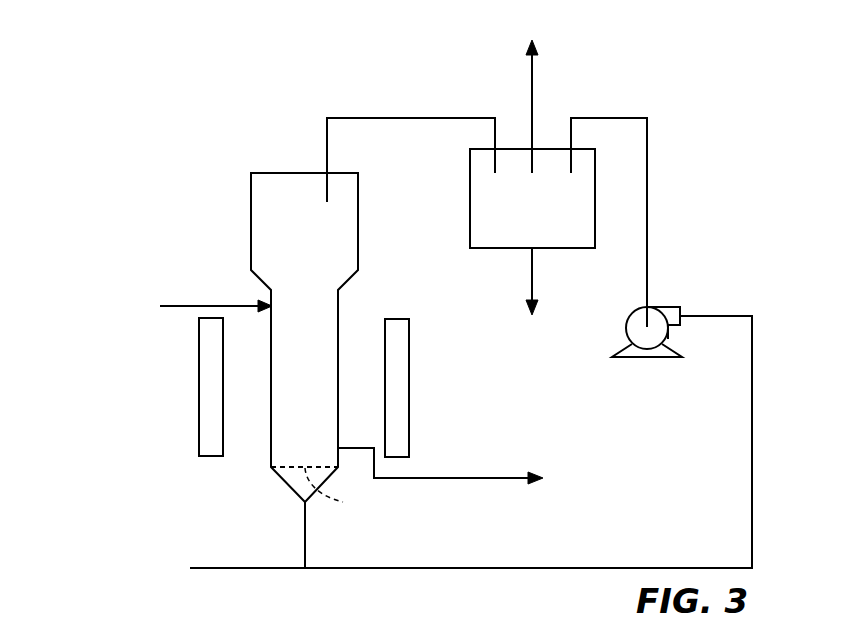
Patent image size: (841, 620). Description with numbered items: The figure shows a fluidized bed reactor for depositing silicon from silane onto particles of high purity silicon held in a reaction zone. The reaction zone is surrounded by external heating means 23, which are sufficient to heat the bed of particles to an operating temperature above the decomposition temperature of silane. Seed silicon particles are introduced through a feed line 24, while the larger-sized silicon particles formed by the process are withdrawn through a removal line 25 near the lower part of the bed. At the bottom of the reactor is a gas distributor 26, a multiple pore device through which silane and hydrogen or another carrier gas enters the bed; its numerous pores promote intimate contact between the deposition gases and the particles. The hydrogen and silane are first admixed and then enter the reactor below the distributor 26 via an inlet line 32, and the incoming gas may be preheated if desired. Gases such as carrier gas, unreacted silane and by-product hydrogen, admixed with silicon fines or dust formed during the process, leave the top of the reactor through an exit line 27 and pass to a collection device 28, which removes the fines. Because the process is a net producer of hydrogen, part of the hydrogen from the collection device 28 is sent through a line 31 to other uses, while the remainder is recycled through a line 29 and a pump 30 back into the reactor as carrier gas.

The external heating means 23 is at (199, 383).
The feed line 24 is at (198, 304).
The line for removal of larger-sized silicon particles 25 is at (453, 480).
The gas distributor 26 is at (339, 490).
The gas exit line 27 is at (327, 148).
The collection device 28 is at (595, 208).
The recycle line 29 is at (620, 118).
The pump 30 is at (673, 305).
The hydrogen export line 31 is at (532, 87).
The gas inlet line 32 is at (305, 553).